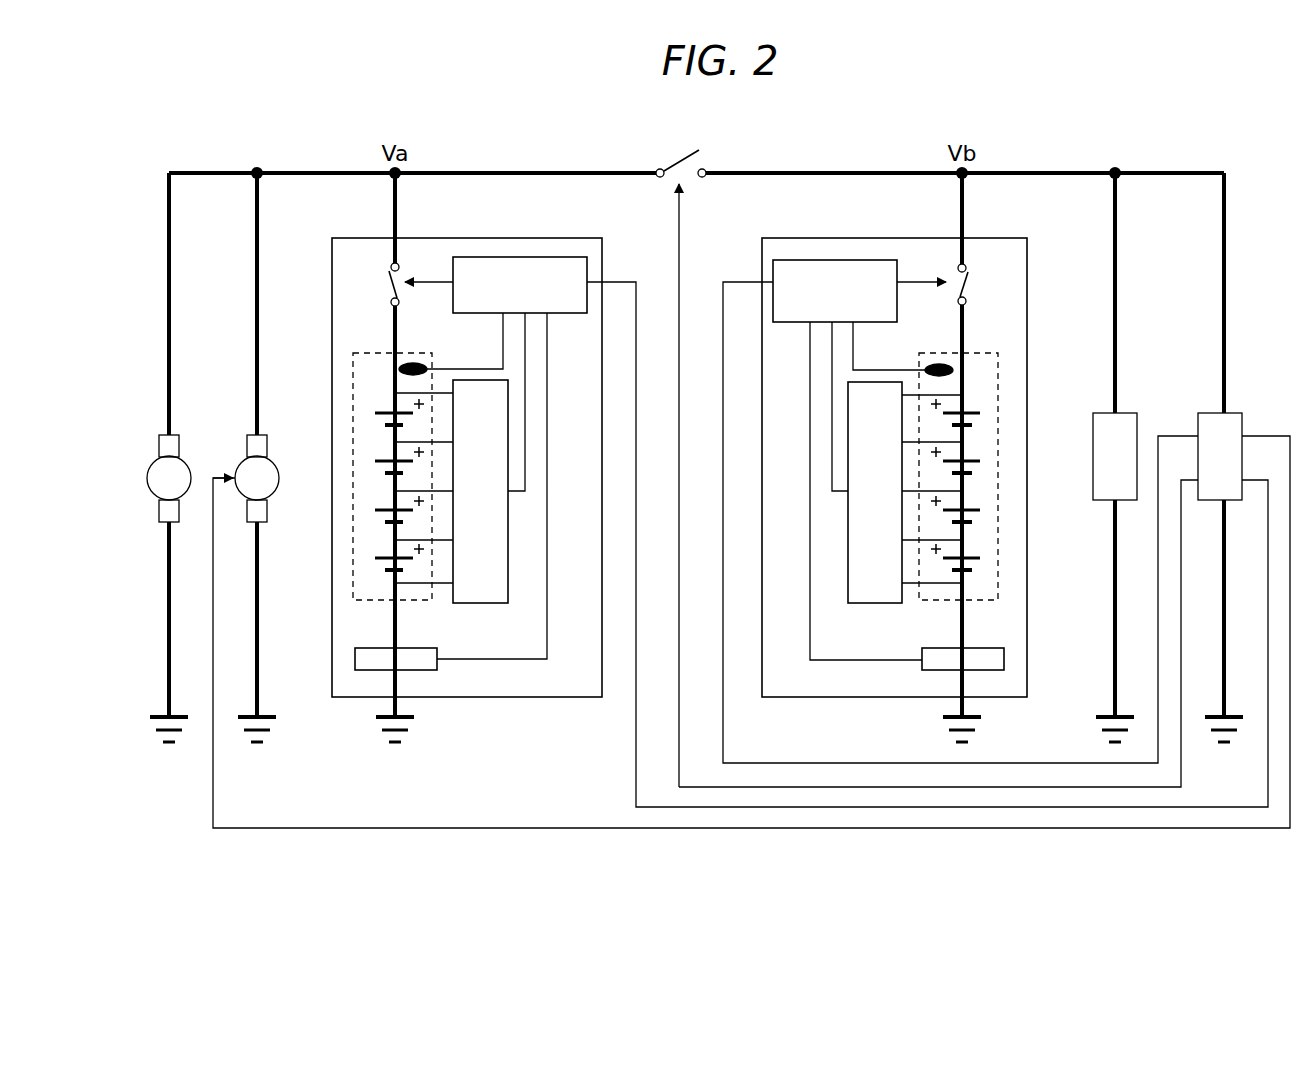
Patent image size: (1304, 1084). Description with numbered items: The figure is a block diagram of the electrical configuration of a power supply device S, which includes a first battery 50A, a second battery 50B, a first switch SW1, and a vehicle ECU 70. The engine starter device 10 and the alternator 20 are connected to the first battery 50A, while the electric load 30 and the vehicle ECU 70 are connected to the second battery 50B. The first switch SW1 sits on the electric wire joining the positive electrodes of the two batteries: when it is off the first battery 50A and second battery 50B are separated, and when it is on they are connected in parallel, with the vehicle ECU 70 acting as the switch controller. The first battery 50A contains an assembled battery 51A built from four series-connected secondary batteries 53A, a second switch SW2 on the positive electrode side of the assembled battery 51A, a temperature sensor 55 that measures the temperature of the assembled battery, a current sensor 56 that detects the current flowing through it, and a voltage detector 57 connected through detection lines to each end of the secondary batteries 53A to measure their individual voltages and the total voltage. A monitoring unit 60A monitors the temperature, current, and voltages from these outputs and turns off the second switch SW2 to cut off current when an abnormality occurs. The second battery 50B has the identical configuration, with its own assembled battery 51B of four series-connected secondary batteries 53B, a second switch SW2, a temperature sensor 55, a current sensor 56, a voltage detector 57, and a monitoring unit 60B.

The engine starter device 10 is at (186, 468).
The alternator 20 is at (246, 468).
The electric load 30 is at (1128, 413).
The vehicle ECU 70 is at (1232, 413).
The first battery 50A is at (445, 238).
The second battery 50B is at (985, 238).
The monitoring unit 60A is at (557, 257).
The monitoring unit 60B is at (824, 260).
The assembled battery 51A is at (388, 353).
The assembled battery 51B is at (975, 353).
The secondary batteries 53A is at (388, 556).
The secondary batteries 53B is at (969, 557).
The temperature sensor 55 is at (413, 363).
The current sensor 56 is at (376, 650).
The voltage detector 57 is at (485, 604).
The first switch SW1 is at (683, 149).
The second switch SW2 is at (679, 284).
The power supply device S is at (897, 125).